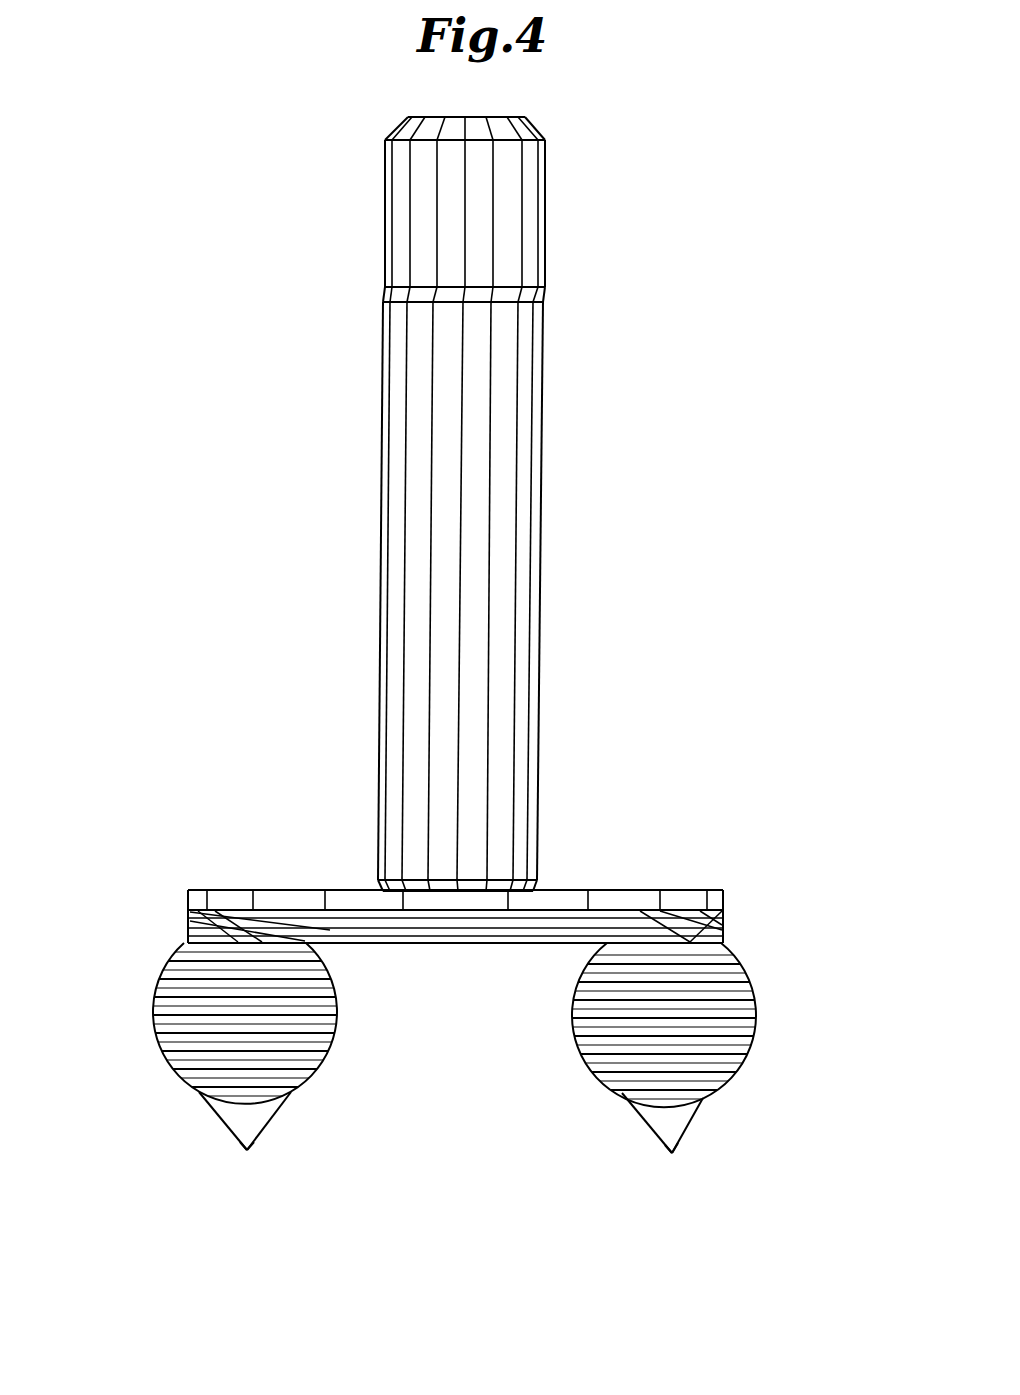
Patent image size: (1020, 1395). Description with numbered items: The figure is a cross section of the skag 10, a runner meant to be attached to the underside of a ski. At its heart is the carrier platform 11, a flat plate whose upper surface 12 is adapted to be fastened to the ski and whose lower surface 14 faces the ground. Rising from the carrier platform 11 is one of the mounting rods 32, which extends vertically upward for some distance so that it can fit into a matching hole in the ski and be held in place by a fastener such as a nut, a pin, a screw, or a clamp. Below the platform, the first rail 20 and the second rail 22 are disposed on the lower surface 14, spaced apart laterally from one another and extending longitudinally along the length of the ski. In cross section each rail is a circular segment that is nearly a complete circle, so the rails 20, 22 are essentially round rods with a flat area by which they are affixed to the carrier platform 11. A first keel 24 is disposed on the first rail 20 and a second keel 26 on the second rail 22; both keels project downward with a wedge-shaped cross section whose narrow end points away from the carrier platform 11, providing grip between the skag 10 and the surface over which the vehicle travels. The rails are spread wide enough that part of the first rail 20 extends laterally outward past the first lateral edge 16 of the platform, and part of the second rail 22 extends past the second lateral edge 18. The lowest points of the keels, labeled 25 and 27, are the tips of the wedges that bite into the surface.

The skag 10 is at (336, 268).
The mounting rods 32 is at (549, 328).
The carrier platform 11 is at (560, 905).
The upper surface 12 is at (324, 884).
The lower surface 14 is at (372, 949).
The first lateral edge 16 is at (182, 895).
The second lateral edge 18 is at (734, 905).
The first rail 20 is at (148, 1035).
The second rail 22 is at (757, 1057).
The first keel 24 is at (206, 1118).
The second keel 26 is at (694, 1128).
The left tip point 25 is at (249, 1165).
The right tip point 27 is at (672, 1162).